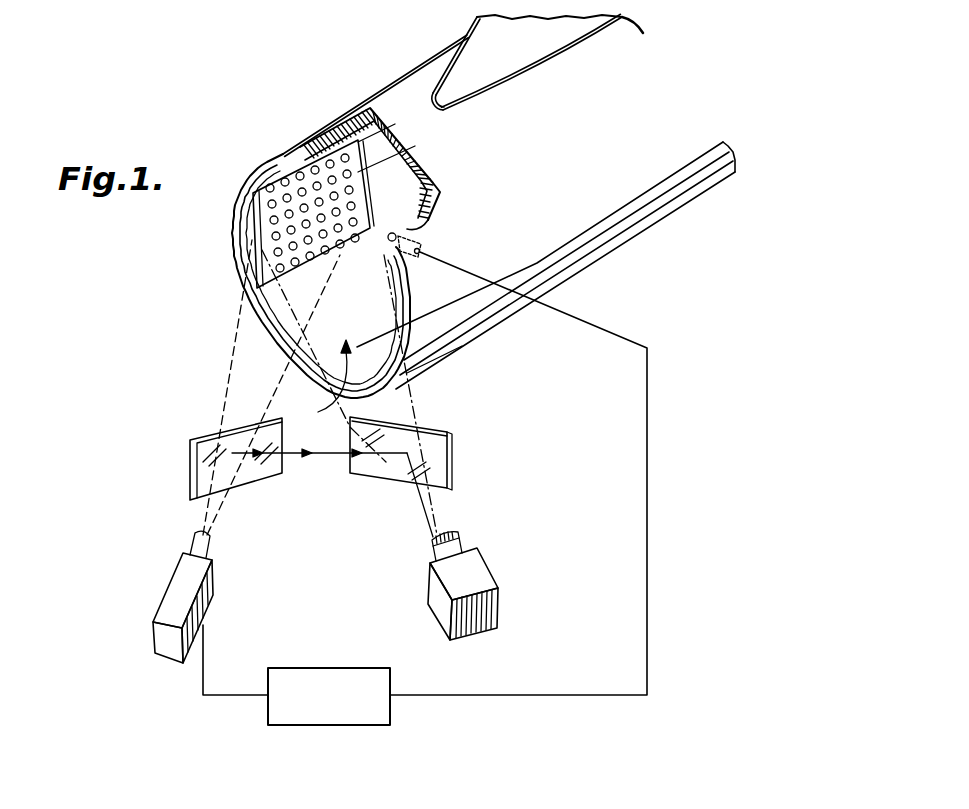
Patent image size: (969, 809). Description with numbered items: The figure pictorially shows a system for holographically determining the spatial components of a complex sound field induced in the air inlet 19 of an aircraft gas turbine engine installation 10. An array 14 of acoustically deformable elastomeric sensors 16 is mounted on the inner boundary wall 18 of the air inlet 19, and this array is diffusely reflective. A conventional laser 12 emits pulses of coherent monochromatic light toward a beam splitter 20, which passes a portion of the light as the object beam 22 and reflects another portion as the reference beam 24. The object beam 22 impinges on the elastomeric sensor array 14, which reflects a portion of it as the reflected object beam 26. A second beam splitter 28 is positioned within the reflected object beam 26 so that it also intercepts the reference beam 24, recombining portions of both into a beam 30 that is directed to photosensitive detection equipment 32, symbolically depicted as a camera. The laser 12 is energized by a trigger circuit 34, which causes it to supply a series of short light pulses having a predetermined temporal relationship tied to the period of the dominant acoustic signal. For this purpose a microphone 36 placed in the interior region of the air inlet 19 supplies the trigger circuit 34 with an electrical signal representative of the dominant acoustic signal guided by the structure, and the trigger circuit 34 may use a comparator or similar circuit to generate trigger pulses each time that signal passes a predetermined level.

The gas turbine engine installation 10 is at (641, 224).
The laser 12 is at (170, 597).
The array of acoustically deformable elastomeric sensors 14 is at (255, 238).
The acoustically deformable elastomeric sensors 16 is at (305, 180).
The inner boundary wall 18 is at (275, 313).
The air inlet 19 is at (324, 356).
The beam splitter 20 is at (200, 436).
The object beam 22 is at (243, 378).
The reference beam 24 is at (300, 458).
The reflected object beam 26 is at (392, 402).
The second beam splitter 28 is at (440, 446).
The beam 30 is at (428, 503).
The photosensitive detection equipment 32 is at (477, 568).
The trigger circuit 34 is at (368, 727).
The microphone 36 is at (410, 230).